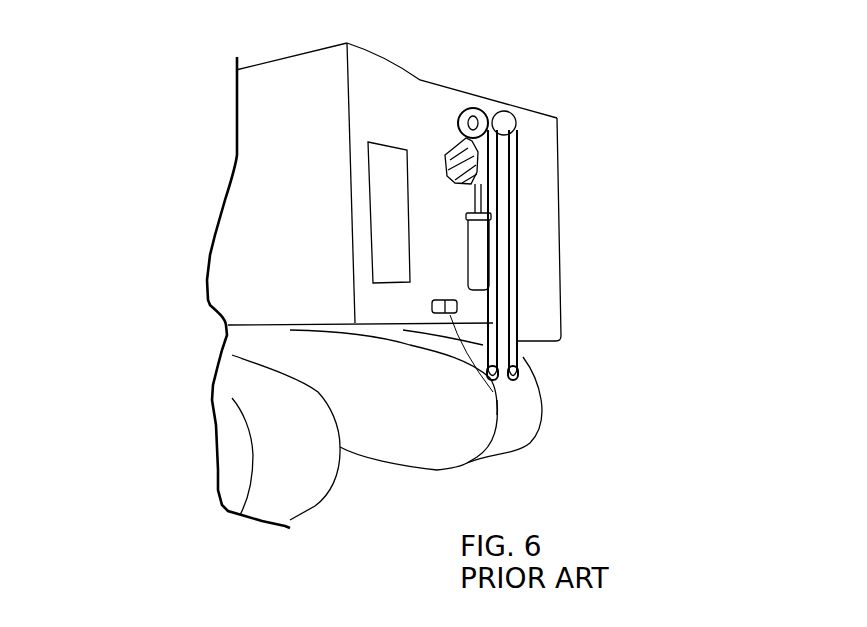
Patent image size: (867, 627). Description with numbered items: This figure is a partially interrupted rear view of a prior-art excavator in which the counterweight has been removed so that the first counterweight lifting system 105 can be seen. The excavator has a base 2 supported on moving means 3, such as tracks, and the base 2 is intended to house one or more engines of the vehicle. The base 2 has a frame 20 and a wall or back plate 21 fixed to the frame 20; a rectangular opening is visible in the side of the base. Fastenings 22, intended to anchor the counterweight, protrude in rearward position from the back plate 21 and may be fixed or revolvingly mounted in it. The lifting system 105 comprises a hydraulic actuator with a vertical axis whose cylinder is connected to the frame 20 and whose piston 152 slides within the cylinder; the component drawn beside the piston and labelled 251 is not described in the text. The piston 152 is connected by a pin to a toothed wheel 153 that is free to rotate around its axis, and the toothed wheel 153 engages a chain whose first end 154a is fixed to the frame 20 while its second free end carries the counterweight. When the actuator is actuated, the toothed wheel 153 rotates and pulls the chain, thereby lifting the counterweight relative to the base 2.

The base 2 is at (290, 140).
The frame 20 is at (385, 187).
The back plate 21 is at (390, 293).
The moving means 3 is at (285, 447).
The toothed wheel 153 is at (476, 108).
The first end of the chain 154a is at (452, 150).
The counterweight lifting system 105 is at (537, 191).
The piston 152 is at (518, 213).
The fastenings 22 is at (503, 402).
The cylinder 251 is at (478, 255).